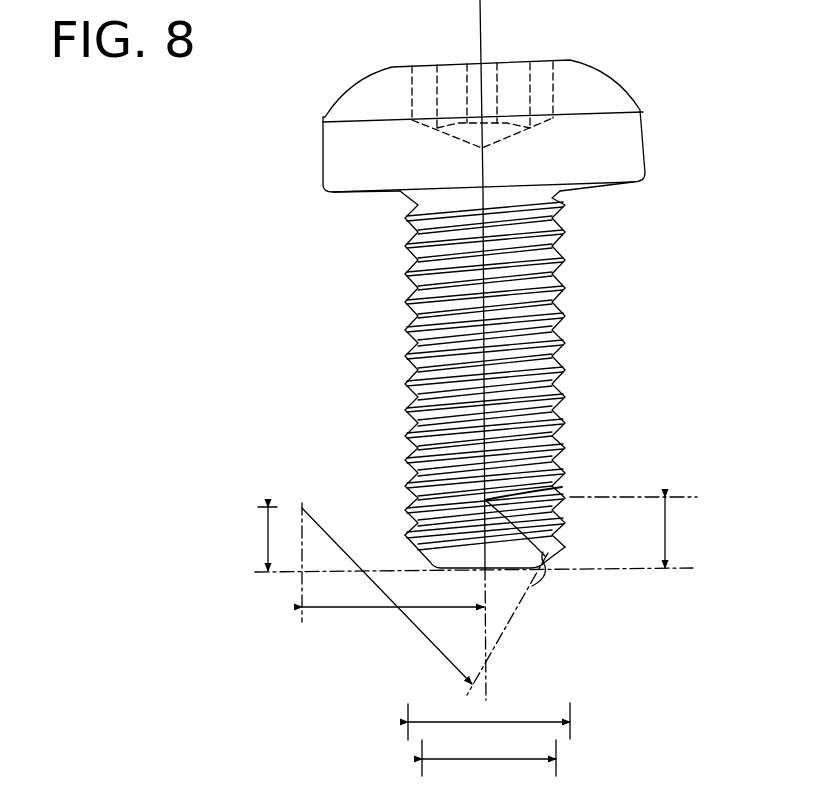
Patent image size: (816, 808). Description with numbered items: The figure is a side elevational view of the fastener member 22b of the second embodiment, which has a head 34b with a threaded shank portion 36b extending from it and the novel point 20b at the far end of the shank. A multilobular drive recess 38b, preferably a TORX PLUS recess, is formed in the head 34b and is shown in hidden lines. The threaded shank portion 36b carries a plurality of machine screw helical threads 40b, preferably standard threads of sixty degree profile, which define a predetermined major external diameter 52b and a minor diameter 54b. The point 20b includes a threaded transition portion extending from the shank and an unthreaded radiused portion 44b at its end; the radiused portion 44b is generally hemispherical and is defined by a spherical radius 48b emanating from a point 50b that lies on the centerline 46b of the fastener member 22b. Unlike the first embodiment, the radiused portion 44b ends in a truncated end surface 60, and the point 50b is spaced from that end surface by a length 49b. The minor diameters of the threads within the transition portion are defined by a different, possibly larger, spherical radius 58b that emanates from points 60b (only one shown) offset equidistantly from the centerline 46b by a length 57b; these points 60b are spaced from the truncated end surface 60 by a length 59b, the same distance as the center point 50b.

The fastener member 22b is at (659, 247).
The head 34b is at (331, 161).
The multilobular drive recess 38b is at (548, 84).
The threaded shank portion 36b is at (494, 370).
The machine screw helical threads 40b is at (548, 291).
The unthreaded radiused portion 44b is at (437, 563).
The truncated end surface 60 is at (468, 573).
The point 50b is at (550, 487).
The spherical radius 48b is at (519, 580).
The point 20b is at (557, 552).
The centerline 46b is at (488, 637).
The points 60b is at (333, 490).
The length 59b is at (248, 539).
The length 57b is at (375, 607).
The spherical radius 58b is at (423, 632).
The length 49b is at (668, 535).
The major external diameter 52b is at (515, 722).
The minor diameter 54b is at (505, 760).